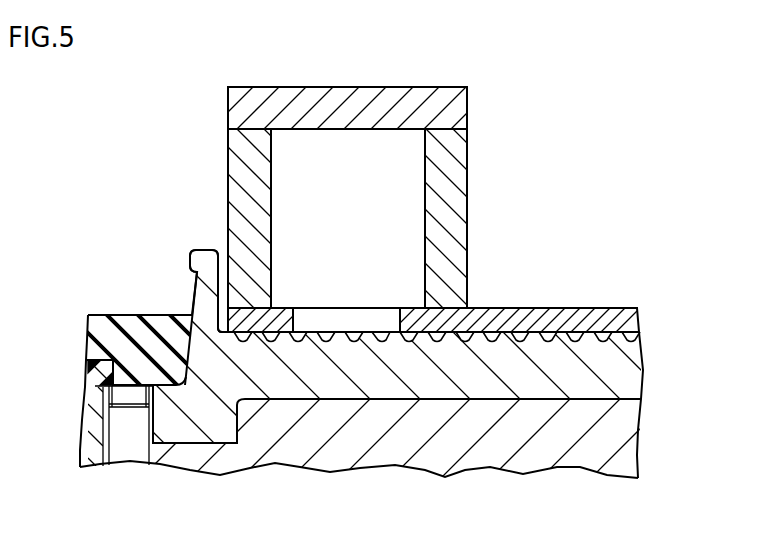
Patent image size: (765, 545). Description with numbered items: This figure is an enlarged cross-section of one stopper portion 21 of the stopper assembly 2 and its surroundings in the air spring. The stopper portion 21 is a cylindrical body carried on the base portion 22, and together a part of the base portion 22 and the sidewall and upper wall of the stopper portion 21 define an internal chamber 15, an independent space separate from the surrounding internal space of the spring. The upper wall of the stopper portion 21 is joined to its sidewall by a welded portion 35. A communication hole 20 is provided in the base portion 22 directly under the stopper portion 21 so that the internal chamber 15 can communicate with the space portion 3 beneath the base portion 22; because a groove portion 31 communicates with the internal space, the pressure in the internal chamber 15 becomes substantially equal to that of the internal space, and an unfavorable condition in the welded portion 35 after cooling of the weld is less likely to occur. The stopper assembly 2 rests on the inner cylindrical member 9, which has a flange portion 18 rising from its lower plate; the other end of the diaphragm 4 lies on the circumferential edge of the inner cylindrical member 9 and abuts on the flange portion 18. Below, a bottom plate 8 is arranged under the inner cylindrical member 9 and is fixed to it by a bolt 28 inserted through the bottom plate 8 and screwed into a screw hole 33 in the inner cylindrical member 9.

The stopper assembly 2 is at (412, 191).
The space portion 3 is at (437, 340).
The diaphragm 4 is at (118, 345).
The bottom plate 8 is at (467, 447).
The inner cylindrical member 9 is at (334, 378).
The internal chamber 15 is at (285, 182).
The flange portion 18 is at (207, 272).
The communication hole 20 is at (398, 327).
The stopper portion 21 is at (453, 216).
The base portion 22 is at (519, 300).
The bolt 28 is at (130, 447).
The groove portion 31 is at (330, 327).
The screw hole 33 is at (108, 397).
The welded portion 35 is at (443, 128).